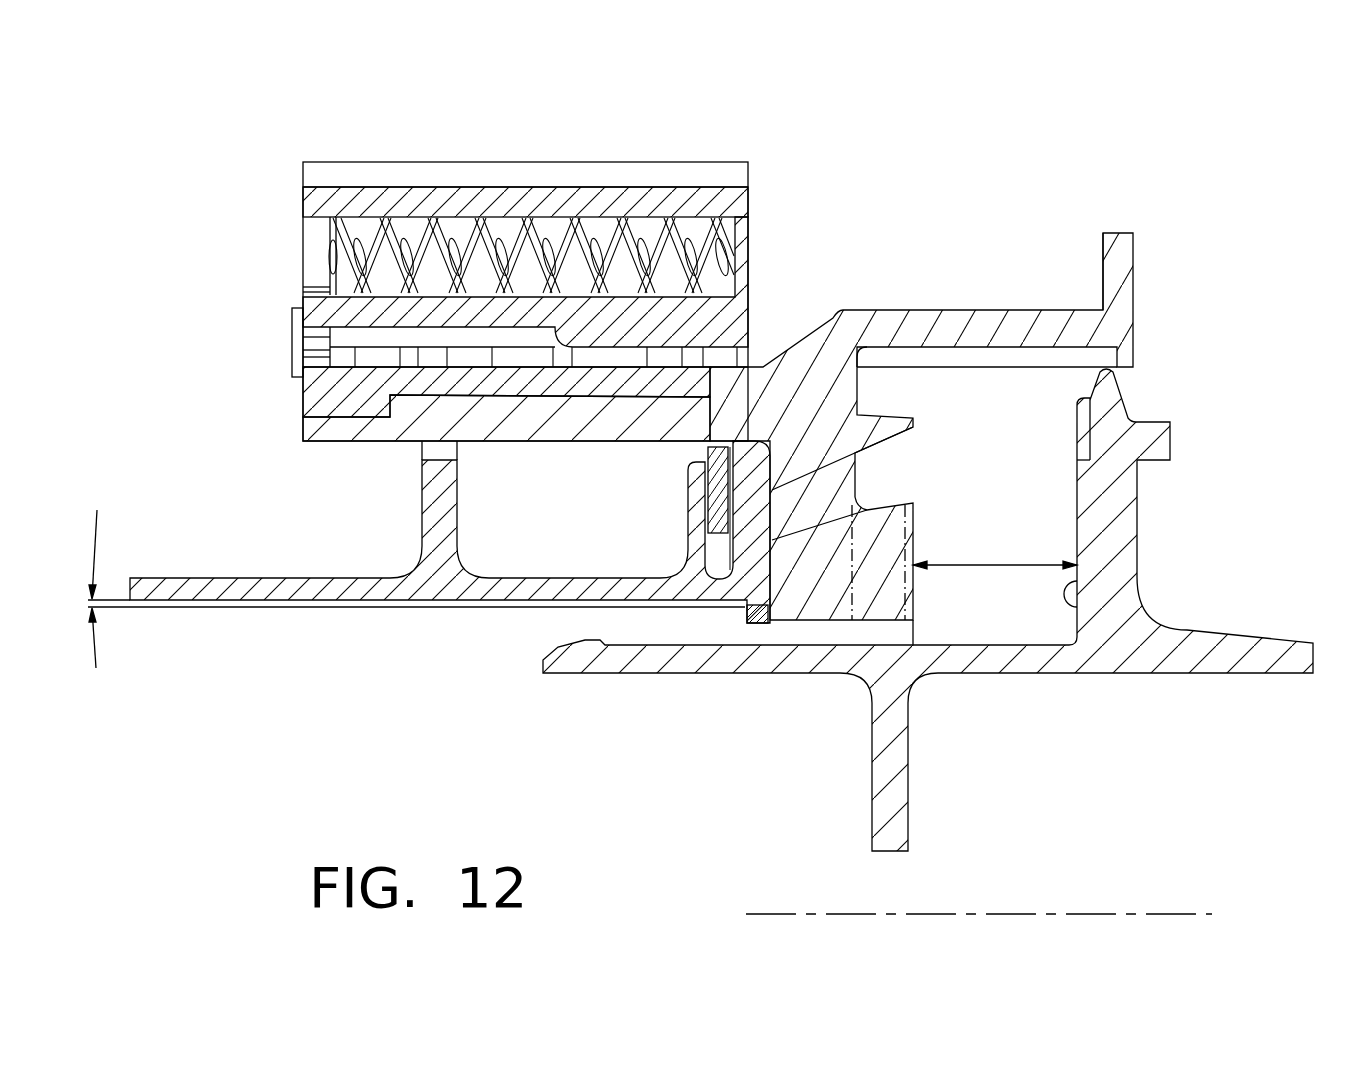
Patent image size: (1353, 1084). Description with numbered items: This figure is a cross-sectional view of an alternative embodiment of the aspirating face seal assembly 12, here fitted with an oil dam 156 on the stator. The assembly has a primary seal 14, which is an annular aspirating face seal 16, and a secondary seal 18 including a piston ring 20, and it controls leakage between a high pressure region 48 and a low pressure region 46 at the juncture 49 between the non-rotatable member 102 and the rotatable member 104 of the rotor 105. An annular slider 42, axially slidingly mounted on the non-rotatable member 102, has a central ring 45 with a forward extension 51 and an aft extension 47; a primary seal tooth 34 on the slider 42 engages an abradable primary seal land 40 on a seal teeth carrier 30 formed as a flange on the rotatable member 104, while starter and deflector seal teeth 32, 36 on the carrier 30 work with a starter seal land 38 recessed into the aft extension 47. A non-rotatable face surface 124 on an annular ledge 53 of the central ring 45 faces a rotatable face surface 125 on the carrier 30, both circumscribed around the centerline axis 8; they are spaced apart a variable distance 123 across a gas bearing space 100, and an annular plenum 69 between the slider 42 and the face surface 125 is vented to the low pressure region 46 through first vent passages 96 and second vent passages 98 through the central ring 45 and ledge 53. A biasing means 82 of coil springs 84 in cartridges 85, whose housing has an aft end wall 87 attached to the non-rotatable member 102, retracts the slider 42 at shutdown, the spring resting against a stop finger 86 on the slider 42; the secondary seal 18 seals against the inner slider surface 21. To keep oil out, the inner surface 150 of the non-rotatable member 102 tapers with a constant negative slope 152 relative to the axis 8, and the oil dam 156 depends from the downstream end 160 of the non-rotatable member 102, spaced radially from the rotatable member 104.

The centerline axis 8 is at (1113, 914).
The aspirating face seal assembly 12 is at (893, 240).
The primary seal 14 is at (1018, 619).
The aspirating face seal 16 is at (1185, 396).
The secondary seal 18 is at (665, 472).
The piston ring 20 is at (717, 523).
The radially inner slider surface 21 is at (607, 443).
The seal teeth carrier 30 is at (1137, 553).
The starter seal tooth 32 is at (1110, 390).
The primary seal tooth 34 is at (900, 430).
The deflector seal tooth 36 is at (1077, 466).
The starter seal land 38 is at (913, 372).
The primary seal land 40 is at (1083, 420).
The annular slider 42 is at (995, 494).
The central ring 45 is at (795, 417).
The low pressure region 46 is at (928, 605).
The aft extension 47 is at (948, 310).
The high pressure region 48 is at (529, 288).
The juncture 49 is at (950, 395).
The forward extension 51 is at (530, 443).
The annular ledge 53 is at (883, 620).
The annular plenum 69 is at (1014, 543).
The biasing means 82 is at (545, 138).
The coil spring 84 is at (650, 215).
The cartridge 85 is at (410, 187).
The stop finger 86 is at (303, 300).
The aft end wall 87 is at (752, 215).
The first vent passages 96 is at (803, 517).
The second vent passages 98 is at (865, 622).
The gas bearing space 100 is at (950, 643).
The non-rotatable member 102 is at (445, 577).
The rotatable member 104 is at (1130, 675).
The rotor 105 is at (1265, 675).
The variable distance 123 is at (977, 568).
The non-rotatable face surface 124 is at (917, 590).
The rotatable face surface 125 is at (1077, 607).
The inner surface 150 is at (240, 607).
The slope 152 is at (96, 528).
The oil dam 156 is at (753, 623).
The downstream end 160 is at (760, 590).